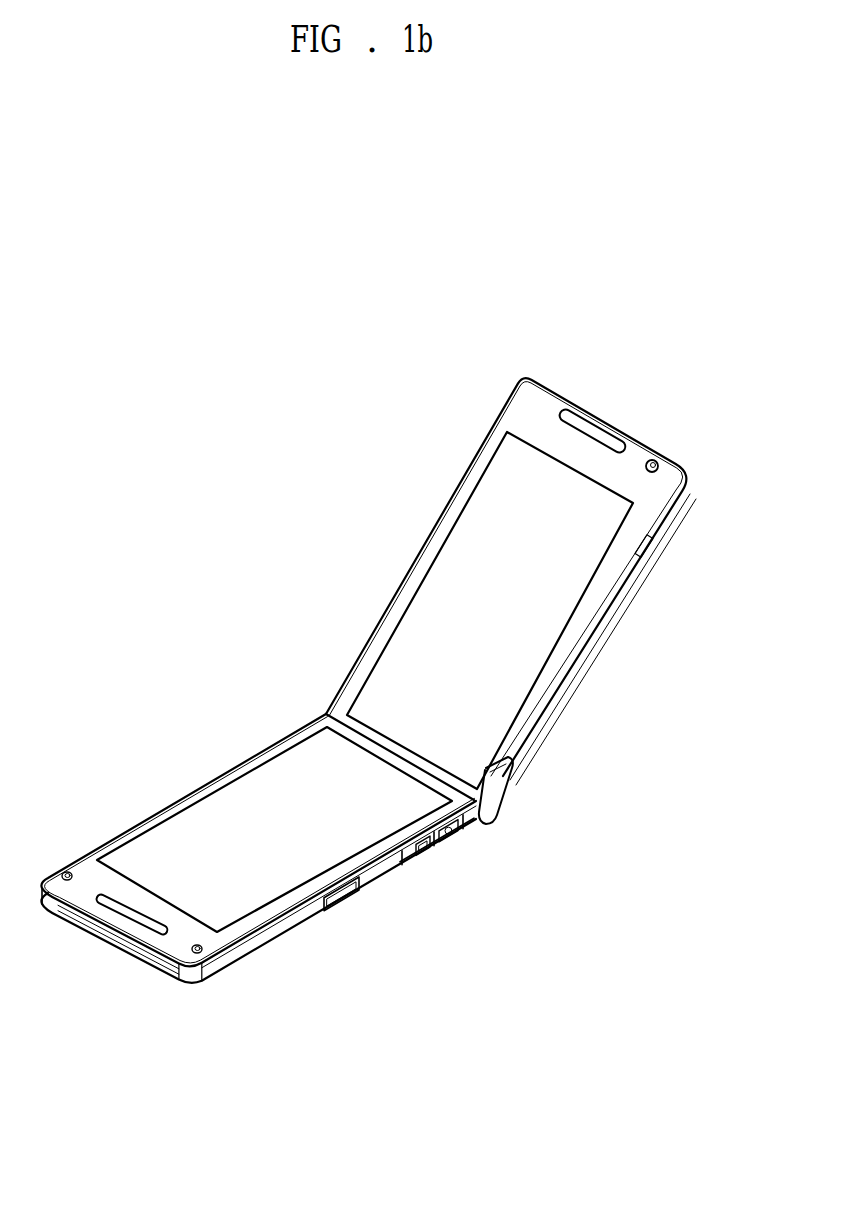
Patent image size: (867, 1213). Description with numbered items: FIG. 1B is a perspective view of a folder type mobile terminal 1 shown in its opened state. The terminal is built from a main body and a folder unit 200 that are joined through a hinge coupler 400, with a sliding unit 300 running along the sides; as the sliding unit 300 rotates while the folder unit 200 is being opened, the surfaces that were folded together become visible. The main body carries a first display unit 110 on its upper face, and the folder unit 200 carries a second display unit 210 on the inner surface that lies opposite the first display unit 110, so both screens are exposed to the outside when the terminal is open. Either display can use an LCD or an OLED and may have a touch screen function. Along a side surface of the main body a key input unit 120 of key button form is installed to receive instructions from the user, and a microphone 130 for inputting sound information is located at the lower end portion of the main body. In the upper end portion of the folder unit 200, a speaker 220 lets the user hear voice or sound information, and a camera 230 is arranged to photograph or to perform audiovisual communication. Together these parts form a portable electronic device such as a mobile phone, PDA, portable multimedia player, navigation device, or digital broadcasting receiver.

The mobile terminal 1 is at (232, 443).
The first display unit 110 is at (317, 843).
The key input unit 120 is at (349, 908).
The microphone 130 is at (122, 913).
The folder unit 200 is at (663, 492).
The second display unit 210 is at (548, 595).
The speaker 220 is at (587, 432).
The camera 230 is at (652, 452).
The sliding unit 300 is at (538, 720).
The hinge coupler 400 is at (503, 793).